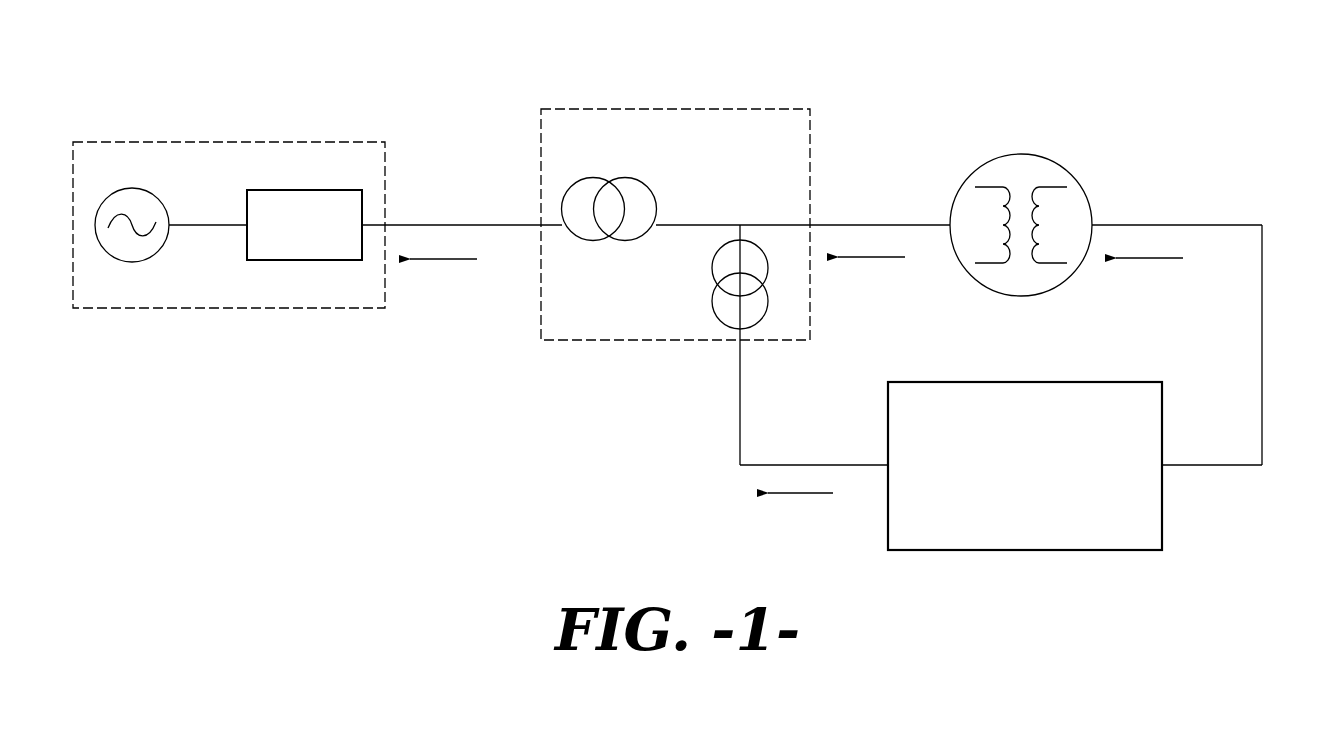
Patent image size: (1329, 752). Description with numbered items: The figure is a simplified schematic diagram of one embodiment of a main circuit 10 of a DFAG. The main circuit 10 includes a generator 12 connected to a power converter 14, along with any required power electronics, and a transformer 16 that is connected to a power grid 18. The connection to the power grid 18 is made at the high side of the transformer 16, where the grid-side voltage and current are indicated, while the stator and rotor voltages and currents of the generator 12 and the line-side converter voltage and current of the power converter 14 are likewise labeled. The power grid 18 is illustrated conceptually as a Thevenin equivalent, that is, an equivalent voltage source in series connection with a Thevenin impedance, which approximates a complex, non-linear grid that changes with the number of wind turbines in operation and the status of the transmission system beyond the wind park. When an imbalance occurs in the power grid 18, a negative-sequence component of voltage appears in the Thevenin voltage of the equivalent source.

The main circuit 10 is at (1213, 75).
The generator 12 is at (1030, 151).
The power converter 14 is at (1068, 381).
The transformer 16 is at (717, 109).
The power grid 18 is at (205, 142).